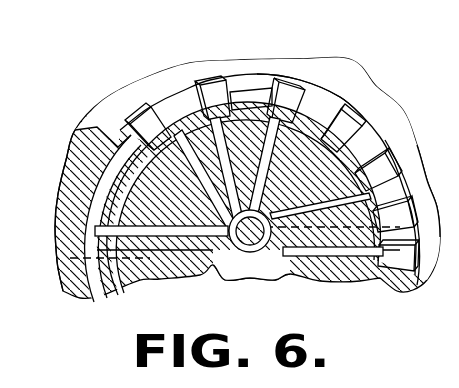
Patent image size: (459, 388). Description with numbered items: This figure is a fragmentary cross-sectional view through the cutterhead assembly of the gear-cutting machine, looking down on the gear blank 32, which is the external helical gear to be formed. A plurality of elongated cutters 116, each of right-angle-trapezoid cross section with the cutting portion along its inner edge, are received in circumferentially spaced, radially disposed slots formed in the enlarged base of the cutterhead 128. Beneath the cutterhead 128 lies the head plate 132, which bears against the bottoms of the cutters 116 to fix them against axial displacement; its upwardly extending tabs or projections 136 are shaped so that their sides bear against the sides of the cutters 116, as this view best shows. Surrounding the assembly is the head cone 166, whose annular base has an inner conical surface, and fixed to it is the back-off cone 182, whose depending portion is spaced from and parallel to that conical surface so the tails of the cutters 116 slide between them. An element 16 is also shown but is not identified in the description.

The housing 16 is at (438, 189).
The gear blank 32 is at (245, 261).
The cutters 116 is at (197, 137).
The cutterhead 128 is at (313, 143).
The head plate 132 is at (263, 77).
The tabs or projections 136 is at (253, 90).
The head cone 166 is at (62, 187).
The back-off cone 182 is at (140, 145).